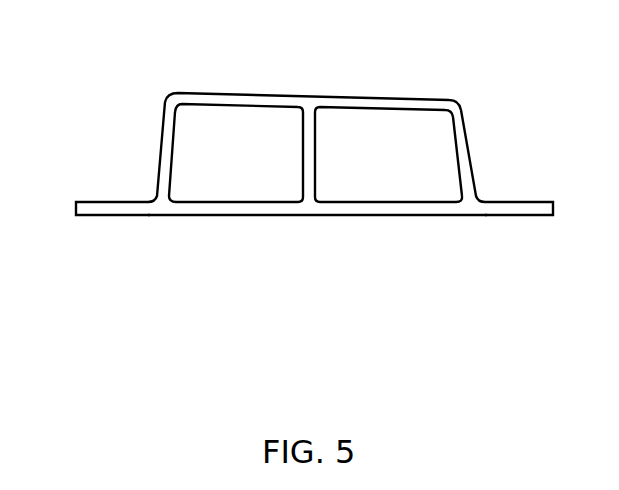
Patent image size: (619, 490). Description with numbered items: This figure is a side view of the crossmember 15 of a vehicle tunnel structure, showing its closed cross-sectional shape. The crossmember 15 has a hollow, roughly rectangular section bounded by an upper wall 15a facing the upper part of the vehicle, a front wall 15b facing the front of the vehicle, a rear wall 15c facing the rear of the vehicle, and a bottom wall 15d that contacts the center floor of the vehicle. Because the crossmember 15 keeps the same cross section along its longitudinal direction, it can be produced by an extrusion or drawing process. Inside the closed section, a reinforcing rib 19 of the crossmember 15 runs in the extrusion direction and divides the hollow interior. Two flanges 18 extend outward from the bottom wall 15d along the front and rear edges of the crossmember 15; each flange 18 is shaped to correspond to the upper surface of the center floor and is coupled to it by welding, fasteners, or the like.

The crossmember 15 is at (163, 83).
The upper wall 15a is at (272, 97).
The front wall 15b is at (168, 150).
The rear wall 15c is at (468, 151).
The bottom wall 15d is at (283, 210).
The flange 18 is at (120, 203).
The reinforcing rib 19 is at (312, 131).